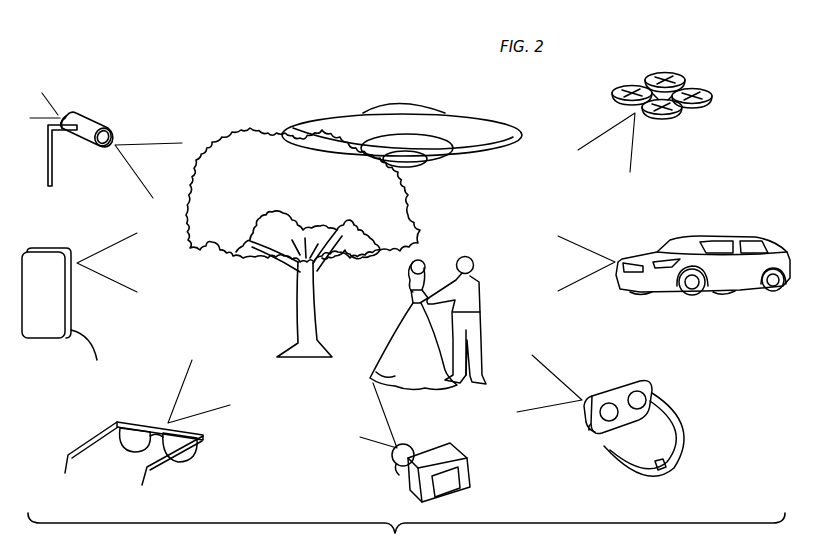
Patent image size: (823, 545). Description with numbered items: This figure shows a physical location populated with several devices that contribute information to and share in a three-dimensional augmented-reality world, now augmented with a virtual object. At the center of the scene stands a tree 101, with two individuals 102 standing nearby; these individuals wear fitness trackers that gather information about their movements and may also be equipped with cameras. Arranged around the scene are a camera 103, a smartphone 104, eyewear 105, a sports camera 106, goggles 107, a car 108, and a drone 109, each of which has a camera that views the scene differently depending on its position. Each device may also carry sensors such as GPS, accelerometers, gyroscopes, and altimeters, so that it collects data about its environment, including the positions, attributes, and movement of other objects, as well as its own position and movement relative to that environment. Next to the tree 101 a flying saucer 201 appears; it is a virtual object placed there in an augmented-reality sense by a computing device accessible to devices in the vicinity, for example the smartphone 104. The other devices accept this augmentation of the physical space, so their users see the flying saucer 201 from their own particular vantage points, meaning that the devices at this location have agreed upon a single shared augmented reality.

The tree 101 is at (298, 305).
The individuals 102 is at (482, 285).
The camera 103 is at (100, 122).
The smartphone 104 is at (66, 317).
The eyewear 105 is at (200, 447).
The sports camera 106 is at (470, 473).
The goggles 107 is at (647, 383).
The car 108 is at (702, 230).
The drone 109 is at (712, 103).
The flying saucer 201 is at (388, 100).